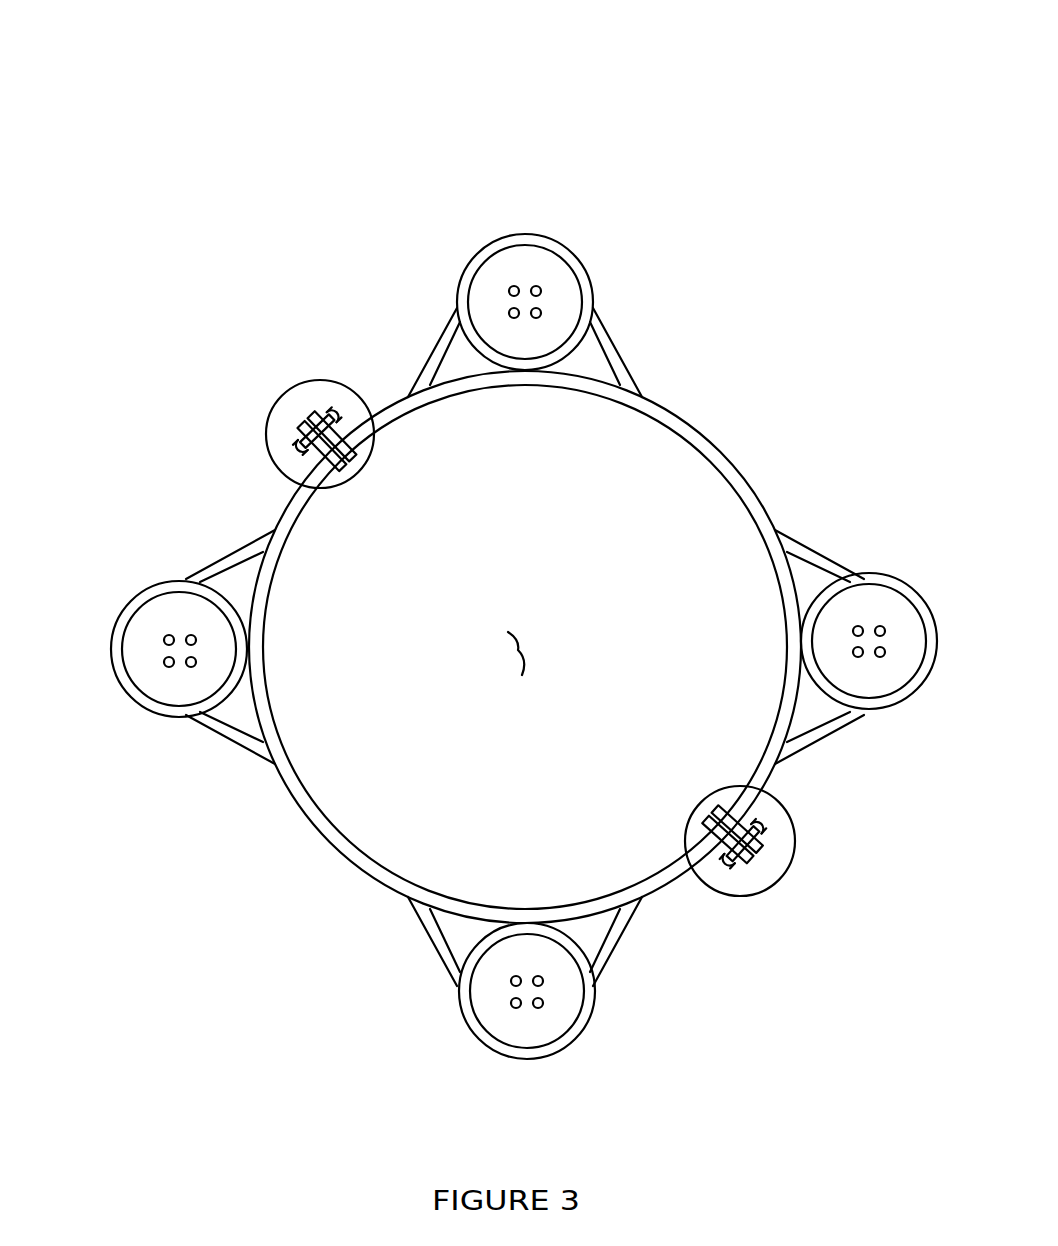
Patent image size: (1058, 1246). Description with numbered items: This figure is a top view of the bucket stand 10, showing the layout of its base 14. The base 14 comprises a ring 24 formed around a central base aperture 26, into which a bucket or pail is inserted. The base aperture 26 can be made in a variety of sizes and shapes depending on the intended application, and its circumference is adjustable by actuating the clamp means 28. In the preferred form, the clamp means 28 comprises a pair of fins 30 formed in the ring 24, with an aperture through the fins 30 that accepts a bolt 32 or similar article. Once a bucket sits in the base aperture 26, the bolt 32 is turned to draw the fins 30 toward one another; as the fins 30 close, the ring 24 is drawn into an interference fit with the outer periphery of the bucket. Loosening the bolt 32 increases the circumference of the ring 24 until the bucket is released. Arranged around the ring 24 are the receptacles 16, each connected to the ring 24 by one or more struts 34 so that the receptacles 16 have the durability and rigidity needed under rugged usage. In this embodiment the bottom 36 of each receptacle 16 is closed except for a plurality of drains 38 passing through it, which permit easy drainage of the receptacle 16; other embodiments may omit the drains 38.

The bucket stand 10 is at (404, 250).
The base 14 is at (650, 382).
The receptacle 16 is at (166, 716).
The ring 24 is at (770, 778).
The base aperture 26 is at (518, 645).
The clamp means 28 is at (322, 380).
The fins 30 is at (312, 420).
The bolt 32 is at (342, 410).
The struts 34 is at (450, 958).
The bottom 36 is at (147, 617).
The drains 38 is at (190, 636).